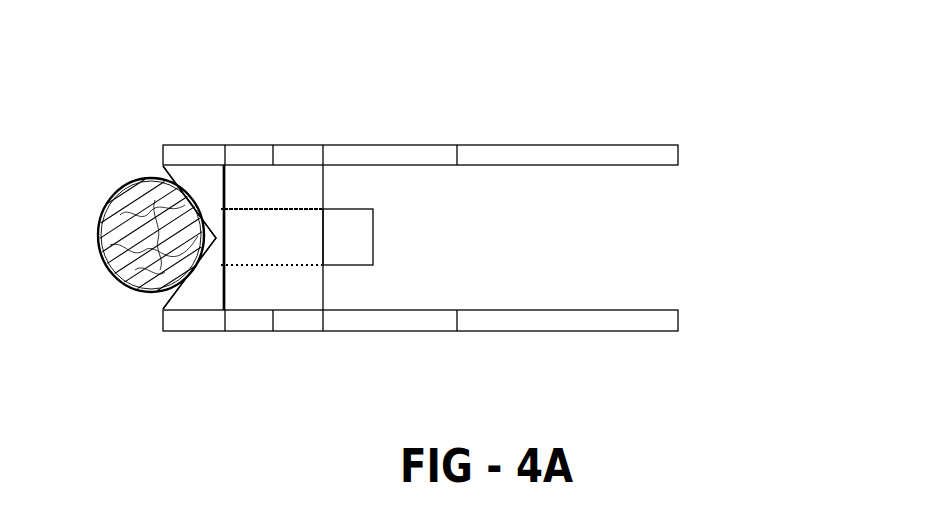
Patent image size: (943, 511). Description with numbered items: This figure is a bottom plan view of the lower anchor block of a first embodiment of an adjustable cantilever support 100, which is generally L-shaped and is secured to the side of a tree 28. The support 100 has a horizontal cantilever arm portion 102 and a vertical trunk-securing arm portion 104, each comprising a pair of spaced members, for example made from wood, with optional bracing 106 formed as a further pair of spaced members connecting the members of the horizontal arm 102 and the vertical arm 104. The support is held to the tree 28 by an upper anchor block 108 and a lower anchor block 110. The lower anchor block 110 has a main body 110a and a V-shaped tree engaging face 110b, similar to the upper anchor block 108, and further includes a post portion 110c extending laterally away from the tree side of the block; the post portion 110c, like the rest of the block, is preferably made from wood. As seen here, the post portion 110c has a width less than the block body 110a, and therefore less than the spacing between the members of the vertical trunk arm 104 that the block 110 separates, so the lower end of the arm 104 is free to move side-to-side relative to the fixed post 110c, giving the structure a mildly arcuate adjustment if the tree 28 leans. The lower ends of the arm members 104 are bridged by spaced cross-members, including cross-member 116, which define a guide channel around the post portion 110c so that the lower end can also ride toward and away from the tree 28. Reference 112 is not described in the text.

The adjustable cantilever support 100 is at (712, 263).
The horizontal cantilever arm portion 102 is at (176, 150).
The vertical trunk-securing arm portion 104 is at (243, 148).
The bracing 106 is at (440, 148).
The upper anchor block 108 is at (255, 187).
The lower anchor block 110 is at (300, 203).
The main body 110a is at (213, 148).
The V-shaped tree engaging face 110b is at (163, 168).
The post portion 110c is at (373, 248).
The intermediate housing segment 112 is at (299, 152).
The cross-member 116 is at (312, 188).
The tree 28 is at (120, 280).